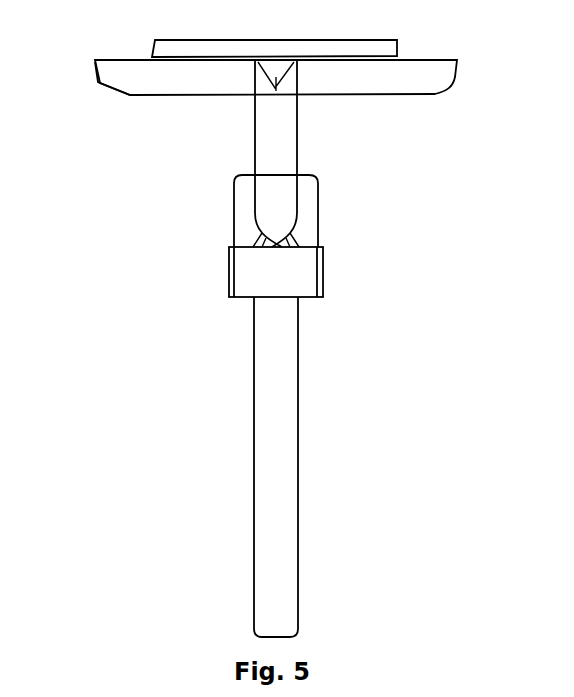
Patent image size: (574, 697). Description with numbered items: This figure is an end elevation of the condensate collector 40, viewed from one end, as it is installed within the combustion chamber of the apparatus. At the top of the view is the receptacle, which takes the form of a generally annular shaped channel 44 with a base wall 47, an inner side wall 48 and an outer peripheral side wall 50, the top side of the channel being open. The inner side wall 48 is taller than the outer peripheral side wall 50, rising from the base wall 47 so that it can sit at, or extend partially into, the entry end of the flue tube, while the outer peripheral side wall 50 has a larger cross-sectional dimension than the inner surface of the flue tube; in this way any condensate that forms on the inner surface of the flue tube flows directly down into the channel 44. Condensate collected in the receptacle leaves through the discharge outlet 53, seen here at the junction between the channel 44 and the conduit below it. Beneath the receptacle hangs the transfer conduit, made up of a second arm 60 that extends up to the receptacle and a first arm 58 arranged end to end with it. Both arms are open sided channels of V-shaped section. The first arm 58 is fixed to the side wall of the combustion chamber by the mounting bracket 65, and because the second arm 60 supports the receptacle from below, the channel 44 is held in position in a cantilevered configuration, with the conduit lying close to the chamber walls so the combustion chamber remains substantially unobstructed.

The condensate collector 40 is at (381, 207).
The channel 44 is at (457, 63).
The base wall 47 is at (130, 96).
The inner side wall 48 is at (398, 55).
The outer peripheral side wall 50 is at (96, 88).
The discharge outlet 53 is at (277, 86).
The first arm 58 is at (298, 532).
The second arm 60 is at (297, 112).
The mounting bracket 65 is at (228, 266).